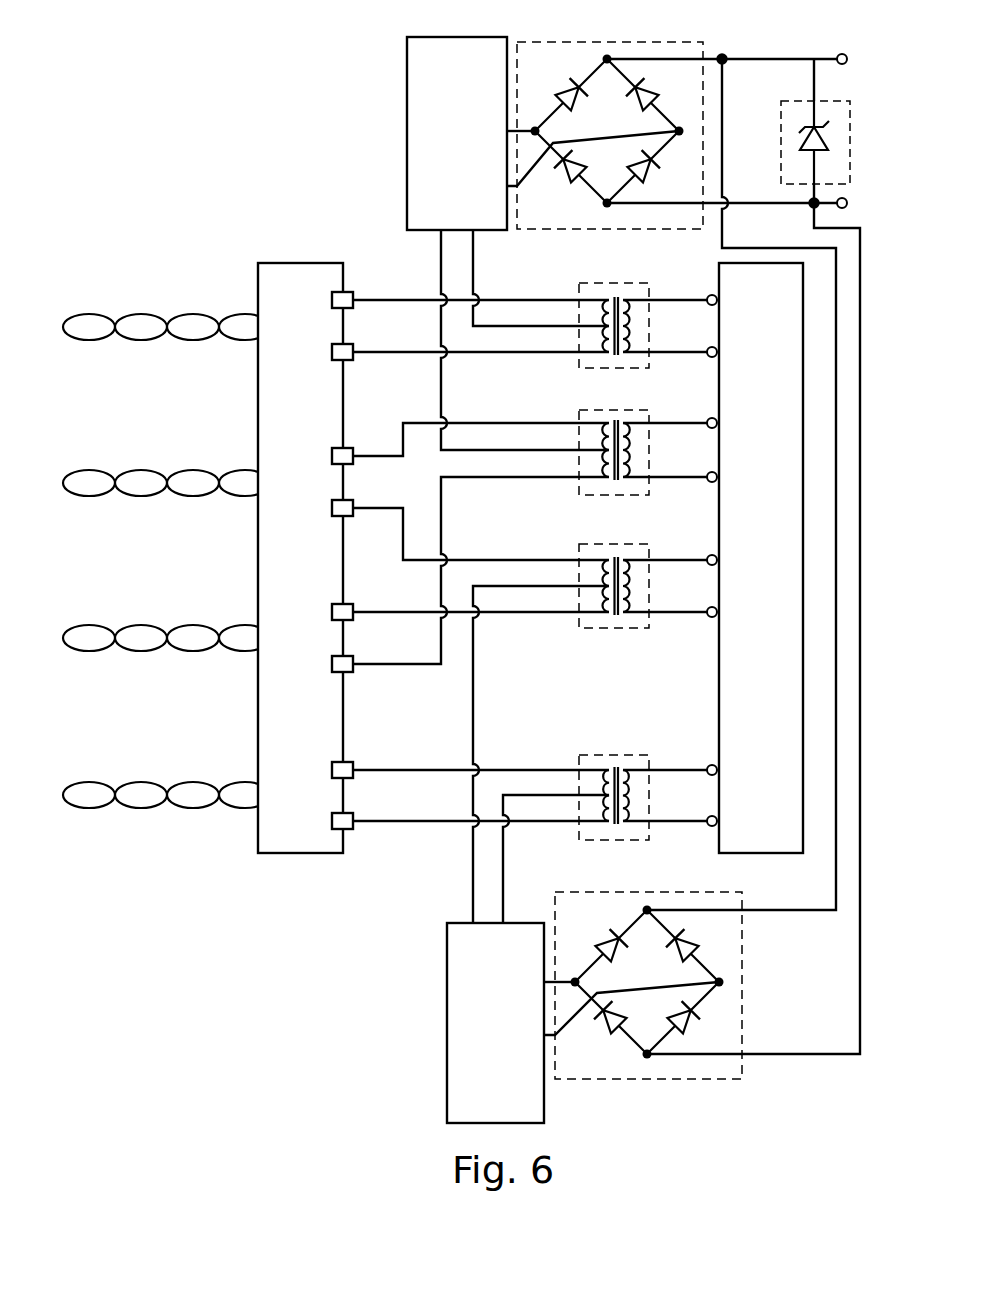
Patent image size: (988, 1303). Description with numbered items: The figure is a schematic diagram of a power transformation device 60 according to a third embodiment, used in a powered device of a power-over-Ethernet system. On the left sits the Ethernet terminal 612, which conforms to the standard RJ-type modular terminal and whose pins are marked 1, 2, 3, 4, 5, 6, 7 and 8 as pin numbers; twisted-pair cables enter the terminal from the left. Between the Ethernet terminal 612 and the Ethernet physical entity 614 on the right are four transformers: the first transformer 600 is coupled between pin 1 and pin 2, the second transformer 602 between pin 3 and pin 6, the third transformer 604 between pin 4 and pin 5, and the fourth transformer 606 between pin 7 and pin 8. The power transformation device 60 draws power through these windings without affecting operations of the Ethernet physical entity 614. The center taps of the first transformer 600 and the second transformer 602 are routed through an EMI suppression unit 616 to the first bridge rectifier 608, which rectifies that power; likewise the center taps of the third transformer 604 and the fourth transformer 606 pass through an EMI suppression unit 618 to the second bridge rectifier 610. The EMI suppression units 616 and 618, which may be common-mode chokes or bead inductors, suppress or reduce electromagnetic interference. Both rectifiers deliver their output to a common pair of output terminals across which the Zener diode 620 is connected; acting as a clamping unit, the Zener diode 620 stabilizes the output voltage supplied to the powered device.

The power transformation device 60 is at (283, 164).
The first transformer 600 is at (622, 283).
The second transformer 602 is at (622, 410).
The third transformer 604 is at (622, 544).
The fourth transformer 606 is at (622, 755).
The first bridge rectifier 608 is at (642, 42).
The second bridge rectifier 610 is at (633, 892).
The Ethernet terminal 612 is at (300, 263).
The Ethernet physical entity 614 is at (760, 853).
The EMI suppression unit 616 is at (422, 37).
The EMI suppression unit 618 is at (460, 923).
The Zener diode 620 is at (830, 101).
The first pin 1 is at (350, 291).
The second pin 2 is at (351, 343).
The third pin 3 is at (351, 447).
The fourth pin 4 is at (351, 499).
The fifth pin 5 is at (351, 603).
The sixth pin 6 is at (351, 655).
The seventh pin 7 is at (351, 761).
The eighth pin 8 is at (351, 812).